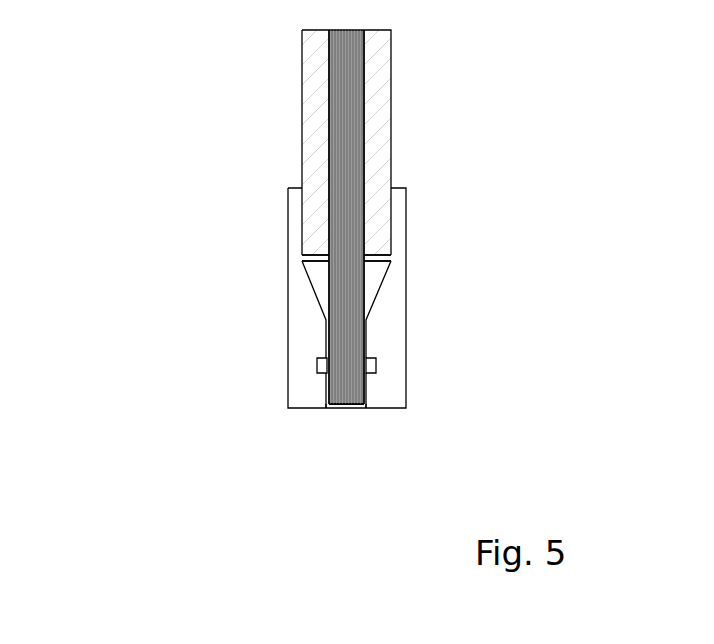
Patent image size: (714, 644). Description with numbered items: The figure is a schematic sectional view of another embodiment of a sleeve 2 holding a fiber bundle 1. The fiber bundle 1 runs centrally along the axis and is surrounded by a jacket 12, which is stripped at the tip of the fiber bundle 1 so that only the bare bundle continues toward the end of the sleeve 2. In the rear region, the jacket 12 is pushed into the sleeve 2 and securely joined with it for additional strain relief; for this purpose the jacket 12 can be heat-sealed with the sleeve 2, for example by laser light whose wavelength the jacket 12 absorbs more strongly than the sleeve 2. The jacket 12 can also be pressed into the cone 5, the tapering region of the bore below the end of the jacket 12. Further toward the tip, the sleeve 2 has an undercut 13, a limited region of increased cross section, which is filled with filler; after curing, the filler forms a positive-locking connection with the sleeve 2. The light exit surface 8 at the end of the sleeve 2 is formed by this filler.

The fiber bundle 1 is at (340, 295).
The sleeve 2 is at (400, 318).
The cone 5 is at (375, 271).
The light exit surface 8 is at (340, 412).
The jacket 12 is at (375, 130).
The undercut 13 is at (320, 368).